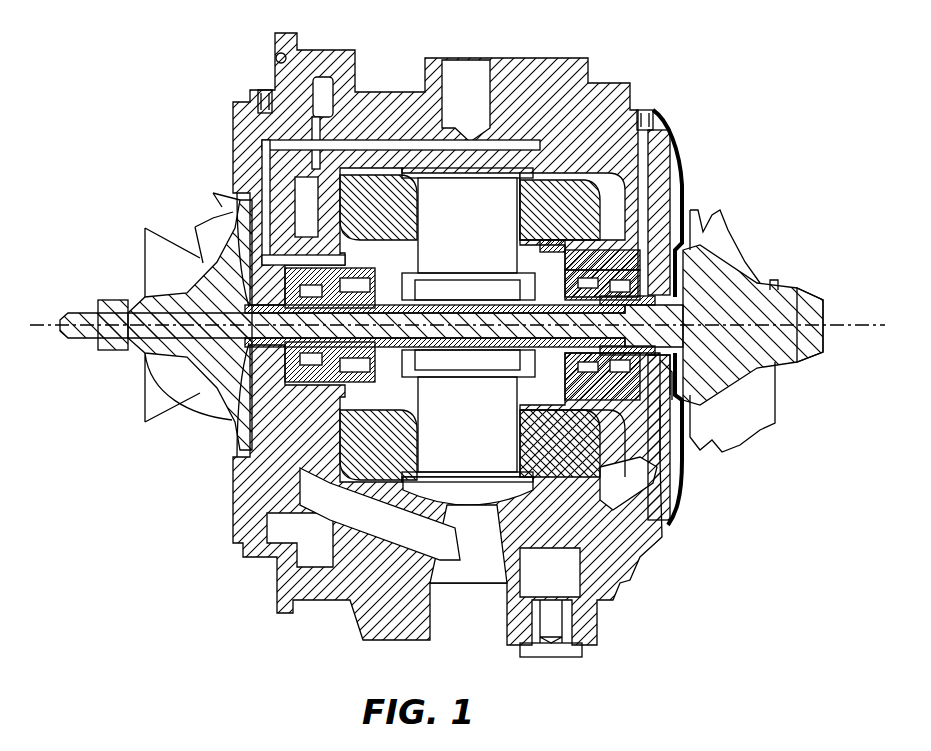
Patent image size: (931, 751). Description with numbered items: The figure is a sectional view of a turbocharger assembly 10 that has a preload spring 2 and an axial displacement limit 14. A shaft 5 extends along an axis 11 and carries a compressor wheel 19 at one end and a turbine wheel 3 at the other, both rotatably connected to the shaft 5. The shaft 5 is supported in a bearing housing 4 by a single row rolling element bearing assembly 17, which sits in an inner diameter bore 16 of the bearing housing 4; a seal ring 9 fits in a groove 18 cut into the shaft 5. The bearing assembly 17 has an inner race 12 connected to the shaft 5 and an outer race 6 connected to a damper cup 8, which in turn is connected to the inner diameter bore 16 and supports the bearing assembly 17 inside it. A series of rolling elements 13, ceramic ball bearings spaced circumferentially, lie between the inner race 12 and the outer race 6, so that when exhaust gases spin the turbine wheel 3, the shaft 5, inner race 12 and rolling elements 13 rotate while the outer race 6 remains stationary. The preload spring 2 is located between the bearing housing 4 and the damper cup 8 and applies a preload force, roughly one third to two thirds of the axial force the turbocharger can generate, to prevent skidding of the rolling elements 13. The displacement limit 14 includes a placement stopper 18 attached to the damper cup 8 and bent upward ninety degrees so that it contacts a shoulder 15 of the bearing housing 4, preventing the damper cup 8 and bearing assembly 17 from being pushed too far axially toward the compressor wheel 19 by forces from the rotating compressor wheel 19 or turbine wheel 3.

The preload spring 2 is at (663, 350).
The turbine wheel 3 is at (820, 311).
The bearing housing 4 is at (640, 282).
The shaft 5 is at (550, 372).
The outer race 6 is at (602, 262).
The damper cup 8 is at (615, 265).
The seal ring 9 is at (675, 367).
The turbocharger assembly 10 is at (748, 102).
The axis 11 is at (50, 322).
The inner race 12 is at (597, 262).
The rolling elements 13 is at (680, 373).
The axial displacement limit 14 is at (556, 246).
The shoulder 15 is at (607, 255).
The inner diameter bore 16 is at (670, 392).
The single row rolling element bearing assembly 17 is at (690, 292).
The placement stopper 18 is at (680, 153).
The compressor wheel 19 is at (163, 250).